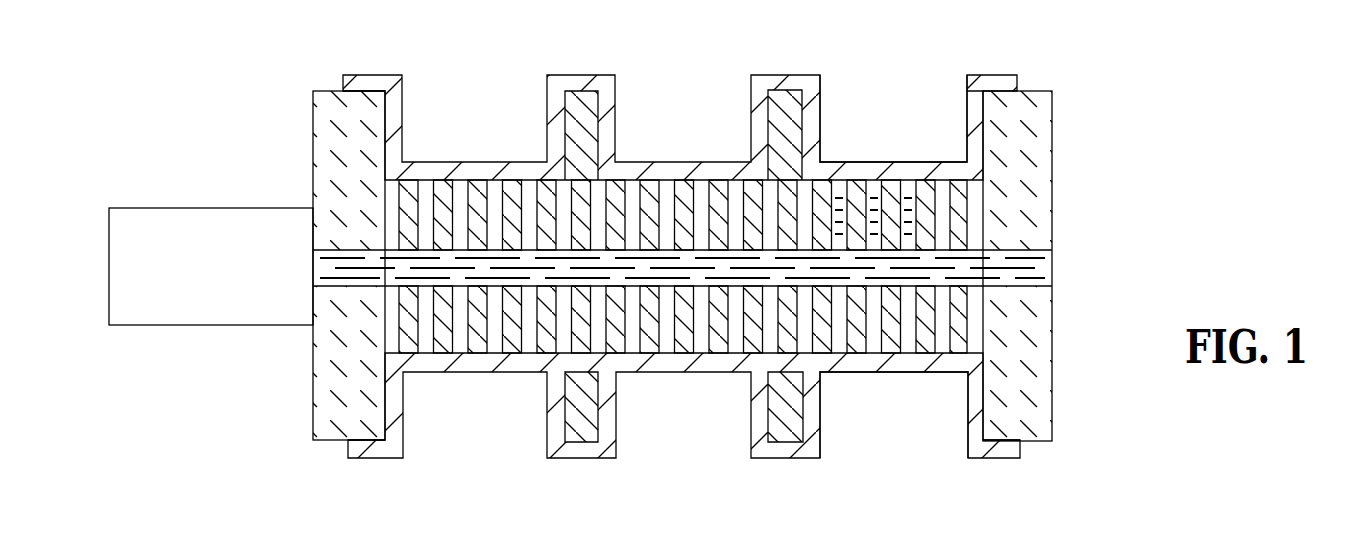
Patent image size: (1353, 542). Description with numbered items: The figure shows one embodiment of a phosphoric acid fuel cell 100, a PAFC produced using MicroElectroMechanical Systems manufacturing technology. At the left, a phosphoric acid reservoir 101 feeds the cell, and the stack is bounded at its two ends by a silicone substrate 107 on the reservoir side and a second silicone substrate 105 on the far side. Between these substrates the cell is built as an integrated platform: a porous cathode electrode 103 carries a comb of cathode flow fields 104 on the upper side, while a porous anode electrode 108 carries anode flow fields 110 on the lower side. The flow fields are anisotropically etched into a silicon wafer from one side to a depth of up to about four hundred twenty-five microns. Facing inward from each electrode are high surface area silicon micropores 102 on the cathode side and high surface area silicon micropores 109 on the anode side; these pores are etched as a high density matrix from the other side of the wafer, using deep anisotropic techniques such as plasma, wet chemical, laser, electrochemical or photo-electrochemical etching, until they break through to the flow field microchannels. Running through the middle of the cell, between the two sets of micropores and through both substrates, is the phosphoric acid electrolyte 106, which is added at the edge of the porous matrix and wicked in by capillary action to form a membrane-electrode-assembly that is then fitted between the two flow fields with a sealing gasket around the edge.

The phosphoric acid fuel cell 100 is at (897, 52).
The phosphoric acid reservoir 101 is at (197, 207).
The high surface area silicon micropores 102 is at (480, 193).
The porous cathode electrode 103 is at (648, 161).
The cathode flow fields 104 is at (912, 112).
The silicone substrate 105 is at (1052, 135).
The phosphoric acid electrolyte 106 is at (441, 262).
The silicone substrate 107 is at (313, 405).
The porous anode electrode 108 is at (780, 459).
The high surface area silicon micropores 109 is at (715, 330).
The anode flow fields 110 is at (915, 423).